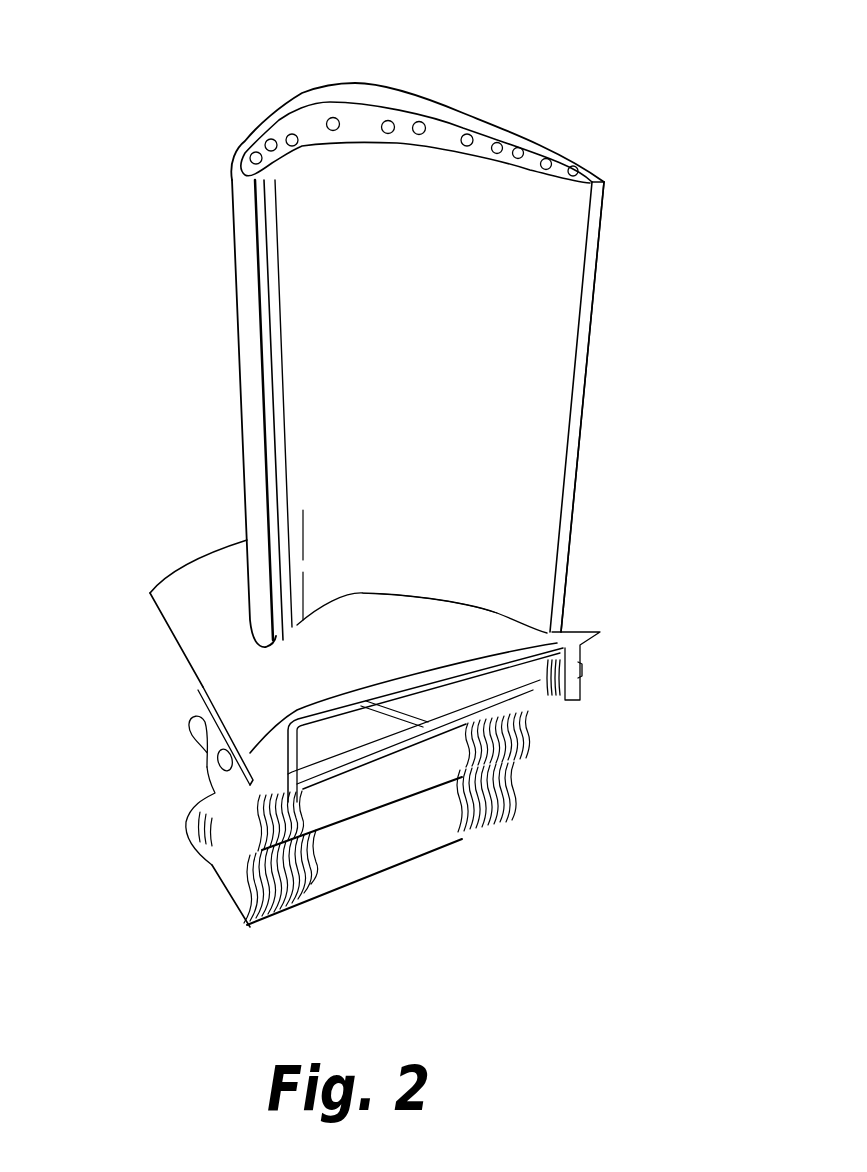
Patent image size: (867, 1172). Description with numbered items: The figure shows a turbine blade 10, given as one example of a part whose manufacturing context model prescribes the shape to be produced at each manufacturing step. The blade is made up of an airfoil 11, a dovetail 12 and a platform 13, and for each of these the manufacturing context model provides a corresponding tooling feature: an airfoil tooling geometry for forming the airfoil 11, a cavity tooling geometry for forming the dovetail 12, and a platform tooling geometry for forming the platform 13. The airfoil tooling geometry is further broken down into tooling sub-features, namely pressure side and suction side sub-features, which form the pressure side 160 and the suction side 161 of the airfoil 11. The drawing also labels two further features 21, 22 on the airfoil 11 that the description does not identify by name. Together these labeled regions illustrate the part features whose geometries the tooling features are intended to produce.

The turbine blade 10 is at (133, 380).
The airfoil 11 is at (548, 503).
The dovetail 12 is at (211, 627).
The platform 13 is at (232, 802).
The leading edge 21 is at (233, 248).
The trailing edge 22 is at (581, 424).
The pressure side 160 is at (478, 530).
The suction side 161 is at (427, 92).